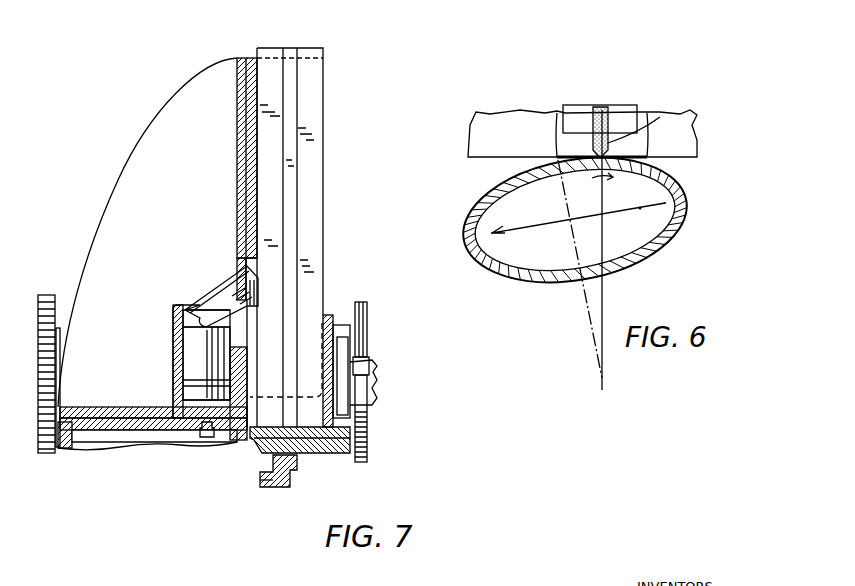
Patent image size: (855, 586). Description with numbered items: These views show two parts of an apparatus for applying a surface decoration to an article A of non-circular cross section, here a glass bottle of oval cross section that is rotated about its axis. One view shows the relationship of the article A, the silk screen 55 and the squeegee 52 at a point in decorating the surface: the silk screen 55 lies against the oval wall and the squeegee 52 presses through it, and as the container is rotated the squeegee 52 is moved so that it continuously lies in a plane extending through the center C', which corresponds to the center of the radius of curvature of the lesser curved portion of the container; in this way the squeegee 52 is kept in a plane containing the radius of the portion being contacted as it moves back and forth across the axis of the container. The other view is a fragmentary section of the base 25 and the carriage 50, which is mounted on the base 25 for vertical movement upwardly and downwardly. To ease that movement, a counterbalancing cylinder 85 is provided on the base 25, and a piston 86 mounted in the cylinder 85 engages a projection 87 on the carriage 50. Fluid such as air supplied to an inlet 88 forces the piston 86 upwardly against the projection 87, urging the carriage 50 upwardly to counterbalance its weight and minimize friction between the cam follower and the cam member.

In FIG. 7, the base 25 is at (137, 392).
In FIG. 7, the carriage 50 is at (305, 46).
In FIG. 7, the counterbalancing cylinder 85 is at (183, 345).
In FIG. 7, the piston 86 is at (197, 392).
In FIG. 7, the projection 87 is at (233, 300).
In FIG. 7, the inlet 88 is at (220, 437).
In FIG. 6, the silk screen 55 is at (563, 113).
In FIG. 6, the squeegee 52 is at (660, 117).
In FIG. 6, the article A is at (687, 213).
In FIG. 6, the center of the radius of curvature of the lesser curved portion C' is at (598, 253).